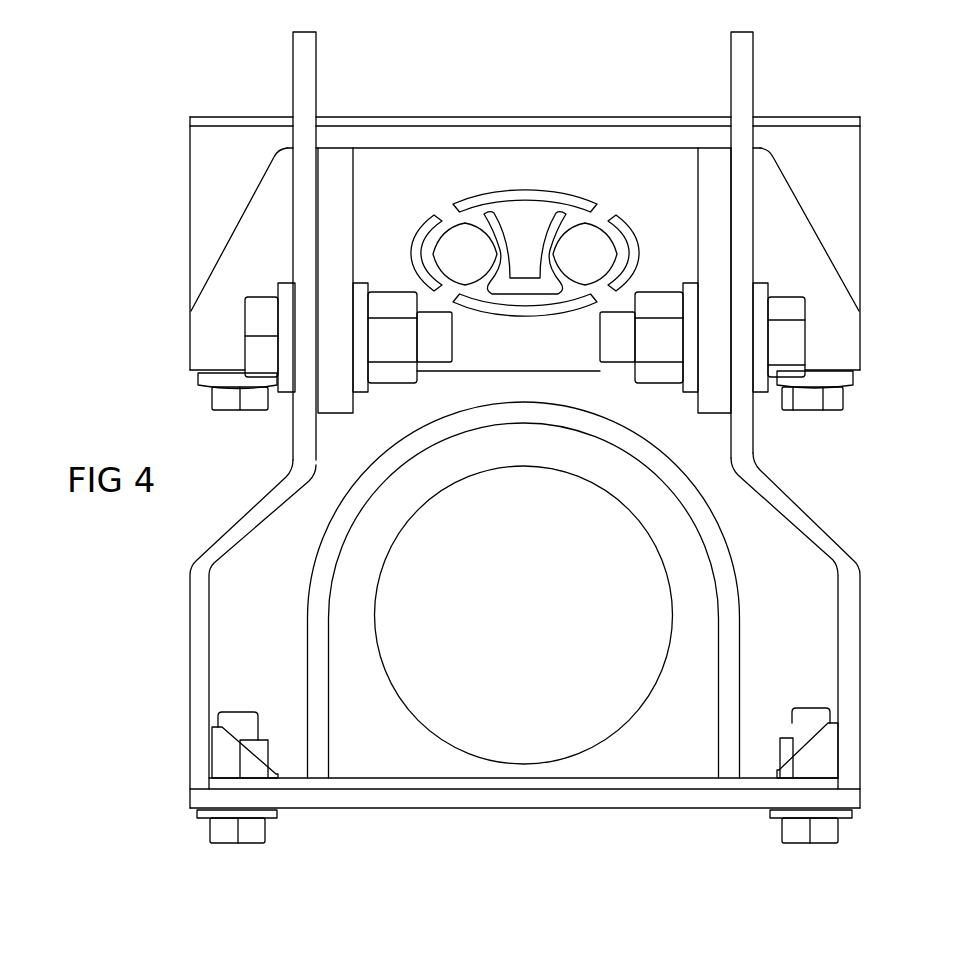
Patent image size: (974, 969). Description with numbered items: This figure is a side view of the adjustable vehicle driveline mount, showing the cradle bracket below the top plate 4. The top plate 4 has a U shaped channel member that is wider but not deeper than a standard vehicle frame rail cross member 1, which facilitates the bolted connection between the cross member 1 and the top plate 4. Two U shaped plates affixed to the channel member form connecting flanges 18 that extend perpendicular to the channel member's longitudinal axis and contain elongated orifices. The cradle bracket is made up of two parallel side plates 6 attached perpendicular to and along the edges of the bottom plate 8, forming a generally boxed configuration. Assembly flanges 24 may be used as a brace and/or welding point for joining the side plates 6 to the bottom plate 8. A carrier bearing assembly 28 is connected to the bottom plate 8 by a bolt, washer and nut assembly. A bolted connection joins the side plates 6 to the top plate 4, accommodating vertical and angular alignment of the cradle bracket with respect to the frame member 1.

The frame rail cross member 1 is at (830, 118).
The top plate 4 is at (800, 217).
The side plates 6 is at (857, 582).
The bottom plate 8 is at (390, 803).
The connecting flanges 18 is at (337, 168).
The assembly flanges 24 is at (825, 750).
The carrier bearing assembly 28 is at (728, 573).